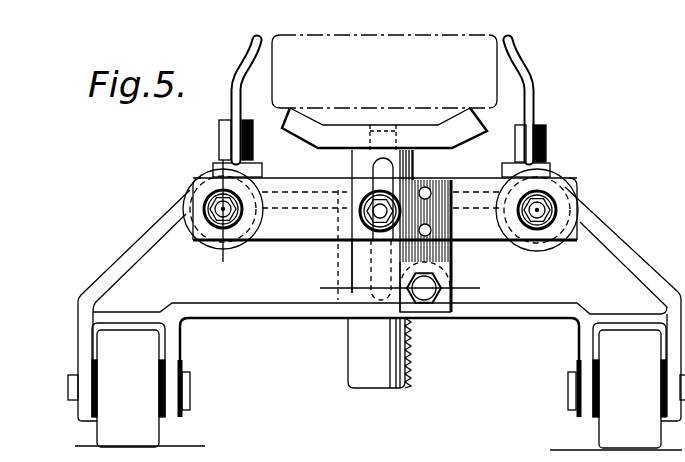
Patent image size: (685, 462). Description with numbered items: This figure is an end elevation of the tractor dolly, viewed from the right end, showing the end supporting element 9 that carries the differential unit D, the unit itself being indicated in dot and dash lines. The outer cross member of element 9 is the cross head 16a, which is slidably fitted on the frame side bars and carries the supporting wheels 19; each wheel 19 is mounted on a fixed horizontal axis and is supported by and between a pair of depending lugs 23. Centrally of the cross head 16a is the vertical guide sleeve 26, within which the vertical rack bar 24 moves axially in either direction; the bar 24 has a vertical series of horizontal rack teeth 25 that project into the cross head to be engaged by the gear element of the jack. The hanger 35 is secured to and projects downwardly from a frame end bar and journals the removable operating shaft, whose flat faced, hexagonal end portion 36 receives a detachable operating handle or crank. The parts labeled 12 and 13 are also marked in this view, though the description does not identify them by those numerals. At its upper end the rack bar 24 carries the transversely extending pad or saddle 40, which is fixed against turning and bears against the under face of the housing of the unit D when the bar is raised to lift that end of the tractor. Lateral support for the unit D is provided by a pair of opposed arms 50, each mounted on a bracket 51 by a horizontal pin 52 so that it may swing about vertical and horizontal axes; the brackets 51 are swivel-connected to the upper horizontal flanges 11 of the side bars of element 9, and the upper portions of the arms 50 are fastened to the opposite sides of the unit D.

The end supporting element 9 is at (224, 165).
The horizontal flange 11 is at (375, 167).
The cross bar 12 is at (475, 226).
The pin 13 is at (478, 294).
The cross head 16a is at (624, 237).
The supporting wheel 19 is at (379, 385).
The depending lug 23 is at (170, 403).
The vertical bar 24 is at (382, 375).
The rack teeth 25 is at (412, 347).
The vertical guide sleeve 26 is at (345, 292).
The hanger 35 is at (442, 186).
The flat faced end portion 36 is at (428, 285).
The pad 40 is at (360, 135).
The arm 50 is at (249, 52).
The bracket 51 is at (222, 122).
The horizontal pin 52 is at (222, 137).
The differential unit D is at (384, 71).